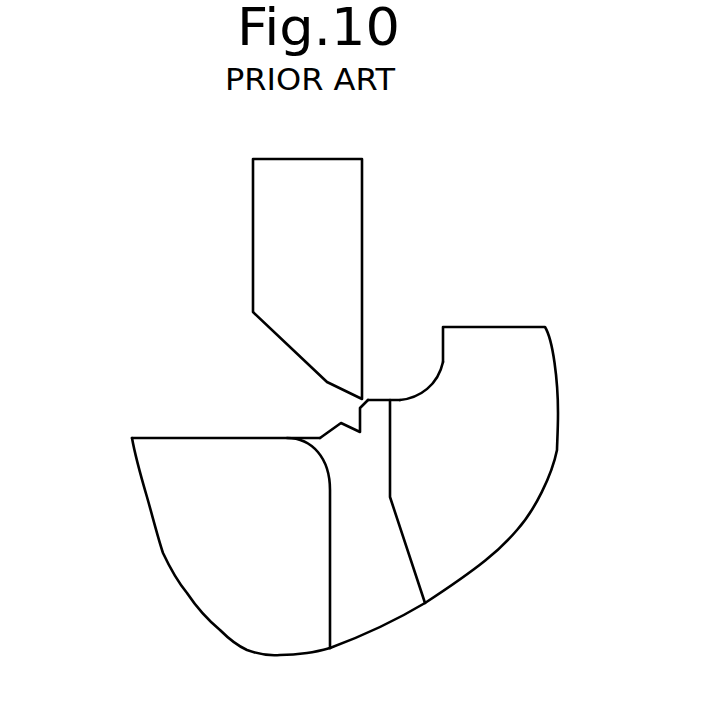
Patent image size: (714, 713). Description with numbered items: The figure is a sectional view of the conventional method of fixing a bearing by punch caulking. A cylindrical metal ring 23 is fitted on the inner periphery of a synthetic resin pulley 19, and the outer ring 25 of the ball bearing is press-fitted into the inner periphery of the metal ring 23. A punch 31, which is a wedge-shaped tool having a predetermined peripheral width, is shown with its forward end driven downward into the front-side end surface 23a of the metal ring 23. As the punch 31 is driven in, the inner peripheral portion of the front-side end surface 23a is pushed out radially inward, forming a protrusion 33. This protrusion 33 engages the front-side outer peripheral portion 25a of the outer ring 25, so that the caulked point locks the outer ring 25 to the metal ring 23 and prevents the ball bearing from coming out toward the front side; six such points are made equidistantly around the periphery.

The pulley 19 is at (442, 362).
The metal ring 23 is at (330, 557).
The front-side end surface 23a is at (378, 399).
The outer ring 25 is at (225, 585).
The front-side outer peripheral portion 25a is at (318, 453).
The punch 31 is at (363, 228).
The protrusion 33 is at (327, 462).